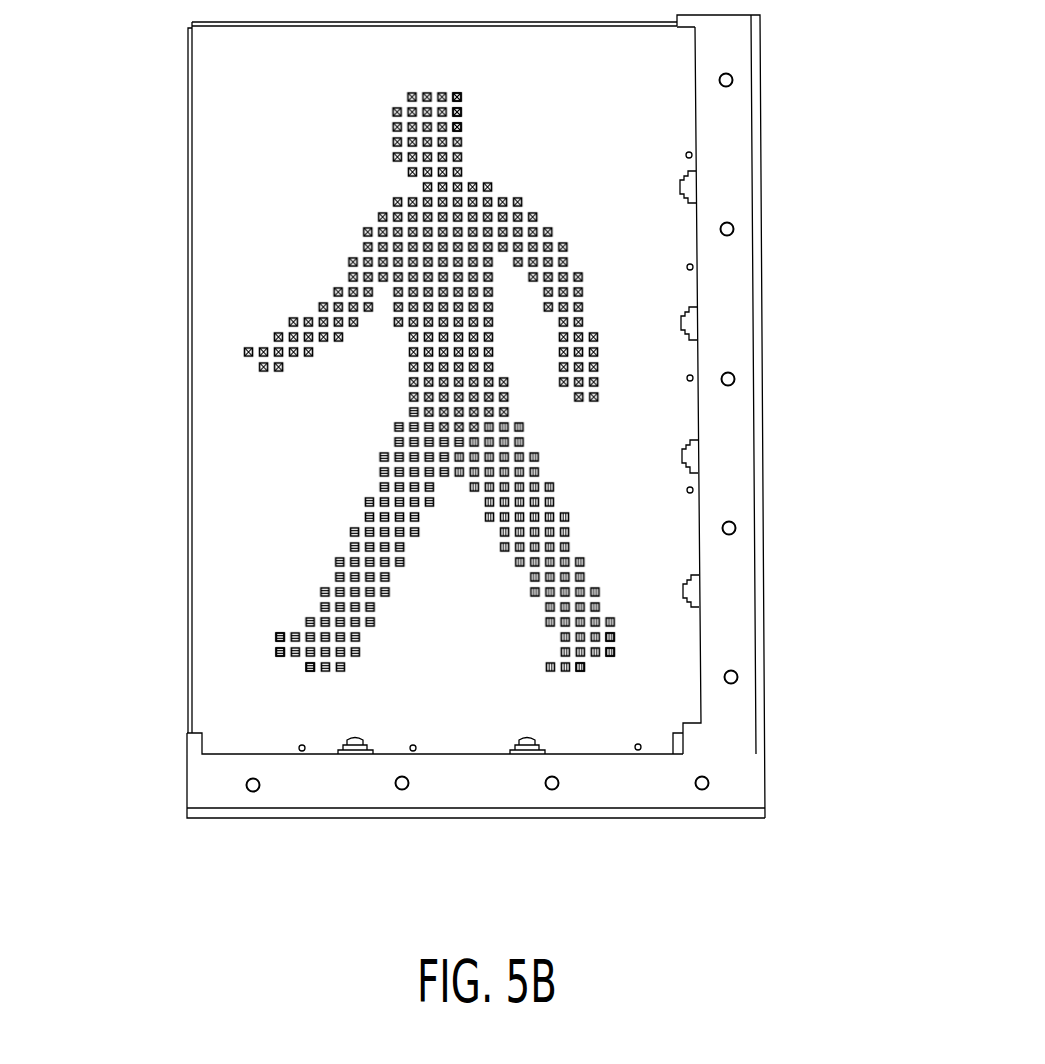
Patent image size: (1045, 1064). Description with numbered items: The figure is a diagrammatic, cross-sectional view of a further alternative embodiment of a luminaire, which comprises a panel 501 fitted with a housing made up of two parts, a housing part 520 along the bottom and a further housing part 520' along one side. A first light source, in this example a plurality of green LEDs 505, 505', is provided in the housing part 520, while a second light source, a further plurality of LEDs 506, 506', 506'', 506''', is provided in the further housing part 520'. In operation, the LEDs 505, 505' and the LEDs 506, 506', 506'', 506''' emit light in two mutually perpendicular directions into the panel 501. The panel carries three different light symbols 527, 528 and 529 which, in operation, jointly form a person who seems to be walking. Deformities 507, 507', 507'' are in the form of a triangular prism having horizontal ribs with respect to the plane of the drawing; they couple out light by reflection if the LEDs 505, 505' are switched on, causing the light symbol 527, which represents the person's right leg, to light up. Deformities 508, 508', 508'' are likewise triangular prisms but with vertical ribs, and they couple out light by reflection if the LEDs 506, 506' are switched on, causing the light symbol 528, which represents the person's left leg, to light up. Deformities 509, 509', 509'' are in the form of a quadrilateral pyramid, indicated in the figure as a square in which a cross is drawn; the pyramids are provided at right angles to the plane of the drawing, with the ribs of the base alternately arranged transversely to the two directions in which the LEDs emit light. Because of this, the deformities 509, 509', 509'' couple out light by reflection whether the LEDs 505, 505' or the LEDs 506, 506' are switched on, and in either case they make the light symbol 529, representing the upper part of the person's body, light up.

The panel 501 is at (154, 281).
The green LED 505 is at (375, 803).
The green LED 505' is at (550, 803).
The LED 506 is at (746, 565).
The LED 506' is at (749, 430).
The LED 506'' is at (751, 297).
The LED 506''' is at (750, 160).
The deformity 507 is at (279, 684).
The deformity 507' is at (248, 654).
The deformity 507'' is at (248, 621).
The deformity 508 is at (612, 678).
The deformity 508' is at (644, 648).
The deformity 508'' is at (644, 621).
The deformity 509 is at (486, 83).
The deformity 509' is at (491, 114).
The deformity 509'' is at (493, 141).
The housing part 520 is at (476, 808).
The housing part 520' is at (761, 416).
The light symbol 527 is at (320, 561).
The light symbol 528 is at (512, 598).
The light symbol 529 is at (336, 188).